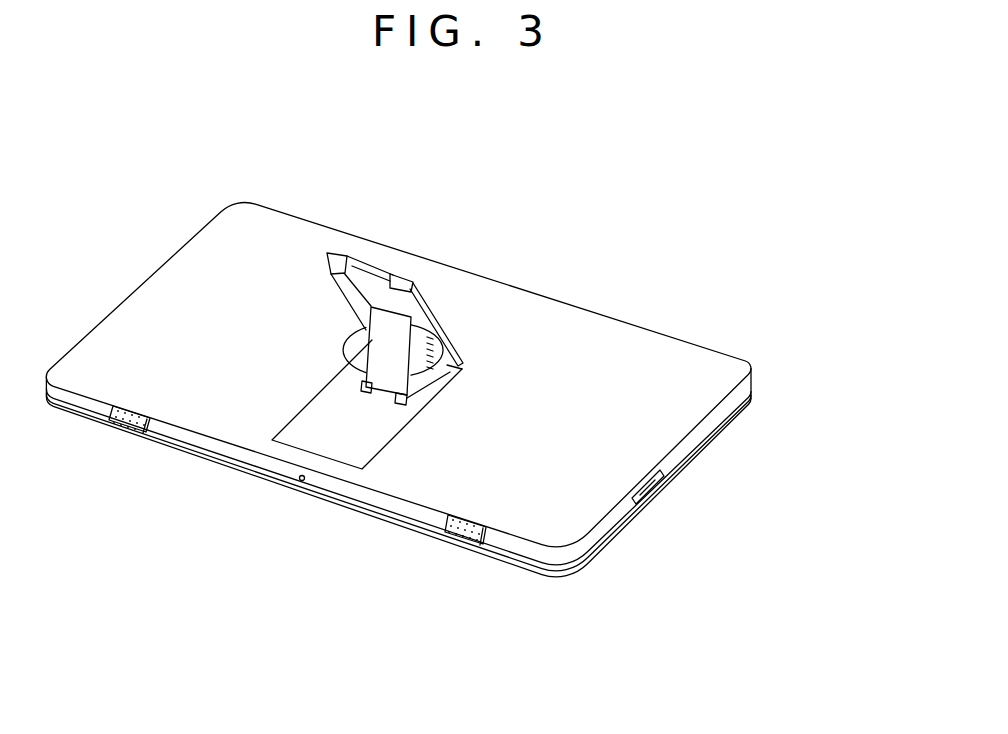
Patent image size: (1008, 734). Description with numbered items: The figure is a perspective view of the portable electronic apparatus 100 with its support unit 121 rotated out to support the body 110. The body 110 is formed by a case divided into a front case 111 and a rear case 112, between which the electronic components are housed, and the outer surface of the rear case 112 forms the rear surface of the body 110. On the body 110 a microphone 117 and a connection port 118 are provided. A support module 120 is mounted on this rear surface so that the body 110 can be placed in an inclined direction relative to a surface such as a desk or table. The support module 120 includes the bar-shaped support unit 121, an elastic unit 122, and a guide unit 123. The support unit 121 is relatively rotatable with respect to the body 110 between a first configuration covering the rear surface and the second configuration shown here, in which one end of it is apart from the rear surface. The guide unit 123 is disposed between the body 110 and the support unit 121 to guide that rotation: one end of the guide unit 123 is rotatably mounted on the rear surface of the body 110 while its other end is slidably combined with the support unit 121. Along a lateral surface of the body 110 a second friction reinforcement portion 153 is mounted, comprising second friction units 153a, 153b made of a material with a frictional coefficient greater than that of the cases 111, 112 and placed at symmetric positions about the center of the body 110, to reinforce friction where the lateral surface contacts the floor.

The portable electronic apparatus 100 is at (474, 408).
The body 110 is at (474, 462).
The front case 111 is at (448, 485).
The rear case 112 is at (753, 383).
The microphone 117 is at (300, 481).
The connection port 118 is at (650, 483).
The support module 120 is at (419, 280).
The support unit 121 is at (371, 276).
The elastic unit 122 is at (447, 341).
The guide unit 123 is at (380, 350).
The second friction reinforcement portion 153 is at (297, 533).
The second friction unit 153a is at (135, 427).
The second friction unit 153b is at (413, 567).